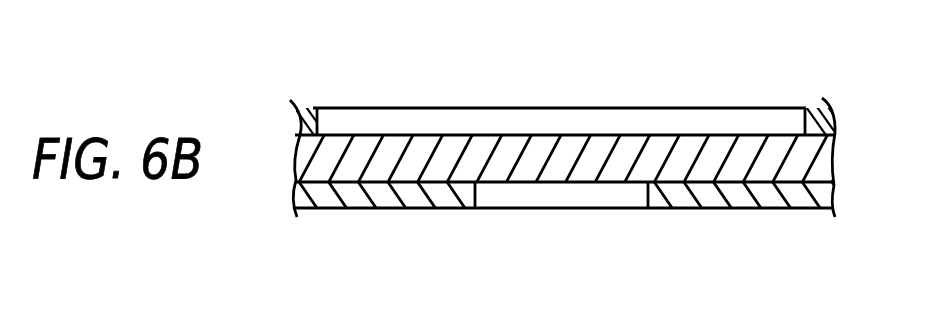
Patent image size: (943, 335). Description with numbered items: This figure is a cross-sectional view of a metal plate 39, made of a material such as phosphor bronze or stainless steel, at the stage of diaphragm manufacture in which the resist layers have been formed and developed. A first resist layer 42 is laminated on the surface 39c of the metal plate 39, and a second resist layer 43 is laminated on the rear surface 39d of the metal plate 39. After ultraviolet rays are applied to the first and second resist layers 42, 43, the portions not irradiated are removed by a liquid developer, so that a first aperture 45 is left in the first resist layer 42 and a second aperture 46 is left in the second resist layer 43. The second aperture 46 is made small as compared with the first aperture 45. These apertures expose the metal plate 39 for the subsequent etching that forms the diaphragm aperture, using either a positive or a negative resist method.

The metal plate 39 is at (518, 165).
The surface of the metal plate 39c is at (693, 132).
The rear surface of the metal plate 39d is at (645, 187).
The first resist layer 42 is at (305, 108).
The second resist layer 43 is at (358, 200).
The first aperture 45 is at (585, 123).
The second aperture 46 is at (500, 200).